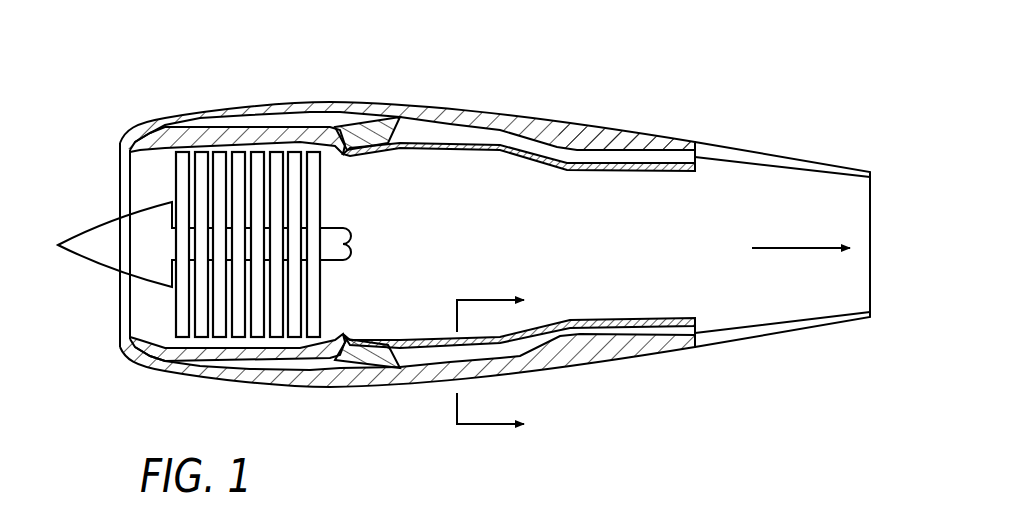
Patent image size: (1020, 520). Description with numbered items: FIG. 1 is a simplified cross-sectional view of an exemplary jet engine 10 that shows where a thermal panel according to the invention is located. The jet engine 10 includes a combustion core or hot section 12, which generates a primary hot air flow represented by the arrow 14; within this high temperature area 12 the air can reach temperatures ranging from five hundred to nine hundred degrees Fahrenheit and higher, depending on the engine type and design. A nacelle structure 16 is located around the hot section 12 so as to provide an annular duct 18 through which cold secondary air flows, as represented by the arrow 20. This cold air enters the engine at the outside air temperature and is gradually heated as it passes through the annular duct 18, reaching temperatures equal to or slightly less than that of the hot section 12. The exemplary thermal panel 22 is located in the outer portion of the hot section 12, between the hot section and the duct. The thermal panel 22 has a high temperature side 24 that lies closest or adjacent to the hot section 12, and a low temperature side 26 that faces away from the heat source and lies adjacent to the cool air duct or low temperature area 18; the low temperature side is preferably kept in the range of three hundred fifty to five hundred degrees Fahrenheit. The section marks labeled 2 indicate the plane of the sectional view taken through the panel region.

The jet engine 10 is at (615, 84).
The combustion core or hot section 12 is at (644, 258).
The arrow representing primary hot air flow 14 is at (793, 248).
The nacelle structure 16 is at (430, 106).
The annular duct 18 is at (623, 155).
The arrow representing cold secondary air flow 20 is at (386, 104).
The thermal panel 22 is at (614, 326).
The high temperature side 24 is at (452, 150).
The low temperature side 26 is at (415, 347).
The section line 2- 2 is at (506, 366).